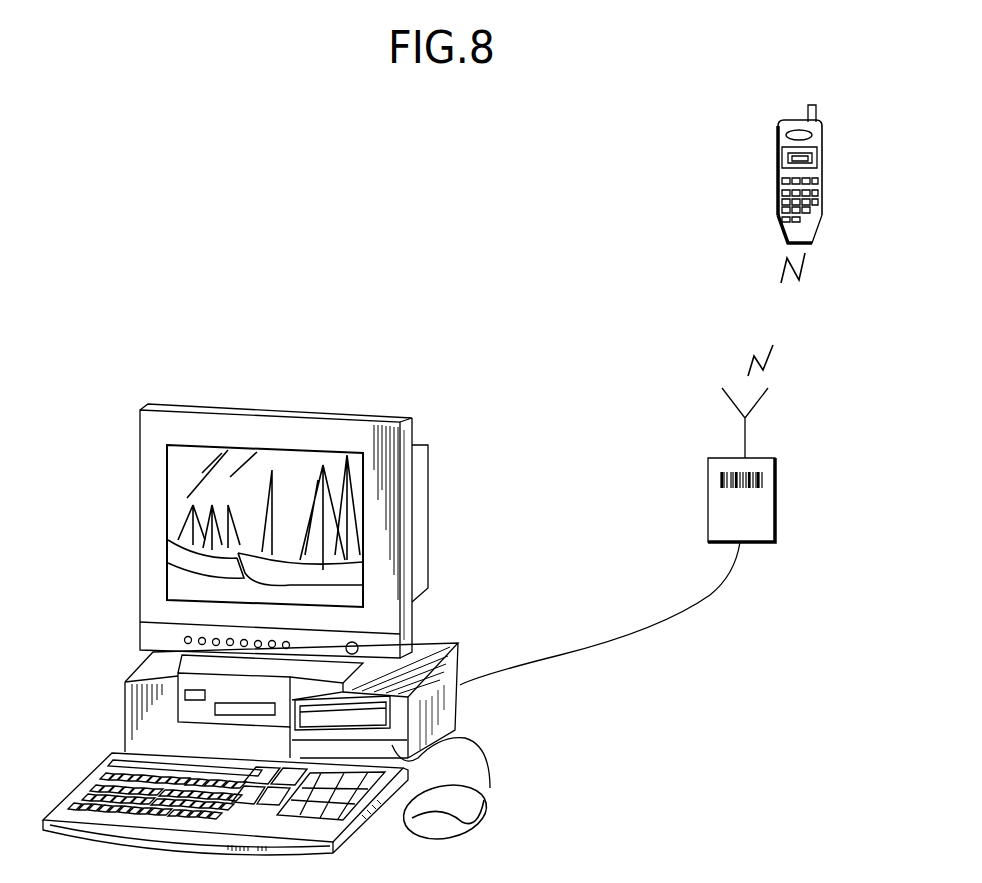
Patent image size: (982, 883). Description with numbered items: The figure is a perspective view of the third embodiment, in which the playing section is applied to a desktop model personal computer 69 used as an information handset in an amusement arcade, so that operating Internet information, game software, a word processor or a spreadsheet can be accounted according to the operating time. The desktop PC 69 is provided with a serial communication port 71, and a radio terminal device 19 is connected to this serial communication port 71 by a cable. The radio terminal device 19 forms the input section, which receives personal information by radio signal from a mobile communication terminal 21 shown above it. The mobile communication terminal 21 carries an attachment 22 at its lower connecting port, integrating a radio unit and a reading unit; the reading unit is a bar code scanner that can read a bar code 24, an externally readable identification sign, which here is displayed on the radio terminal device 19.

The desktop model personal computer 69 is at (302, 392).
The serial communication port 71 is at (440, 753).
The radio terminal device 19 is at (778, 522).
The bar code 24 is at (760, 468).
The mobile communication terminal 21 is at (824, 150).
The attachment 22 is at (820, 238).